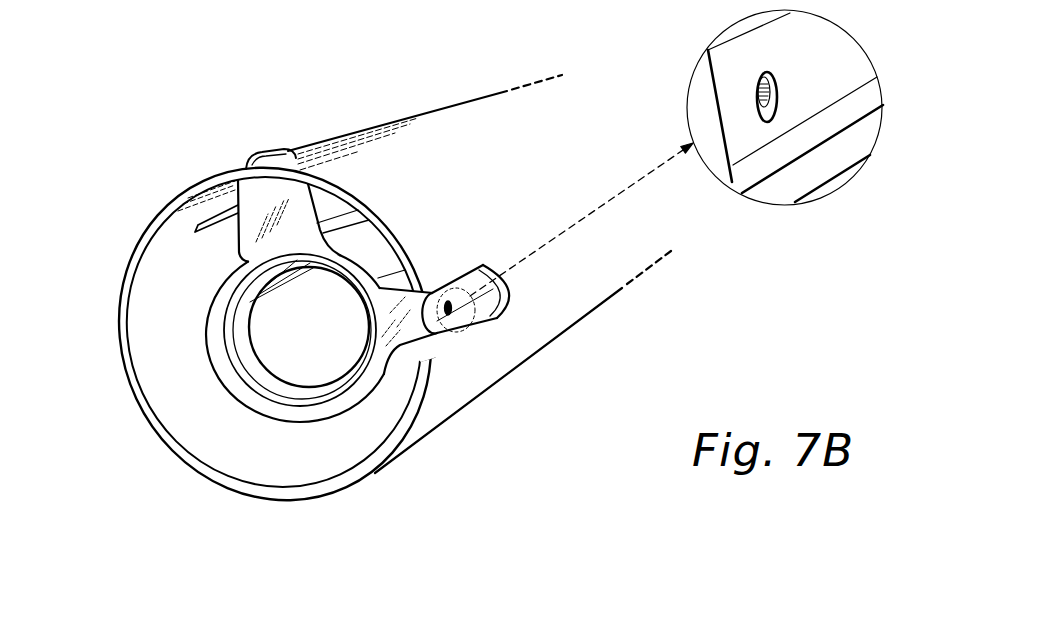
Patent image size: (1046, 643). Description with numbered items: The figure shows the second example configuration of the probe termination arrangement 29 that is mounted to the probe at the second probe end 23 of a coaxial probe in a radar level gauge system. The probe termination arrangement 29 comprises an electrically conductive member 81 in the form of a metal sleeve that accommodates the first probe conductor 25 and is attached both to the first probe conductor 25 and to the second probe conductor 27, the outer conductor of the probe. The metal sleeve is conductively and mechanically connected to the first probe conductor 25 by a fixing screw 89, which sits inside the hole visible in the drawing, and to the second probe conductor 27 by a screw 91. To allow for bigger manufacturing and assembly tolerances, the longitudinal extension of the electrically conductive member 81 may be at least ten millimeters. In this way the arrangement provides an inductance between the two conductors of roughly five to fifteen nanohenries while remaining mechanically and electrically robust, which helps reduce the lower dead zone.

The second probe end 23 is at (107, 454).
The first probe conductor 25 is at (242, 306).
The second probe conductor 27 is at (121, 347).
The probe termination arrangement 29 is at (380, 245).
The electrically conductive member 81 is at (413, 332).
The fixing screw 89 is at (452, 308).
The screw 91 is at (275, 150).